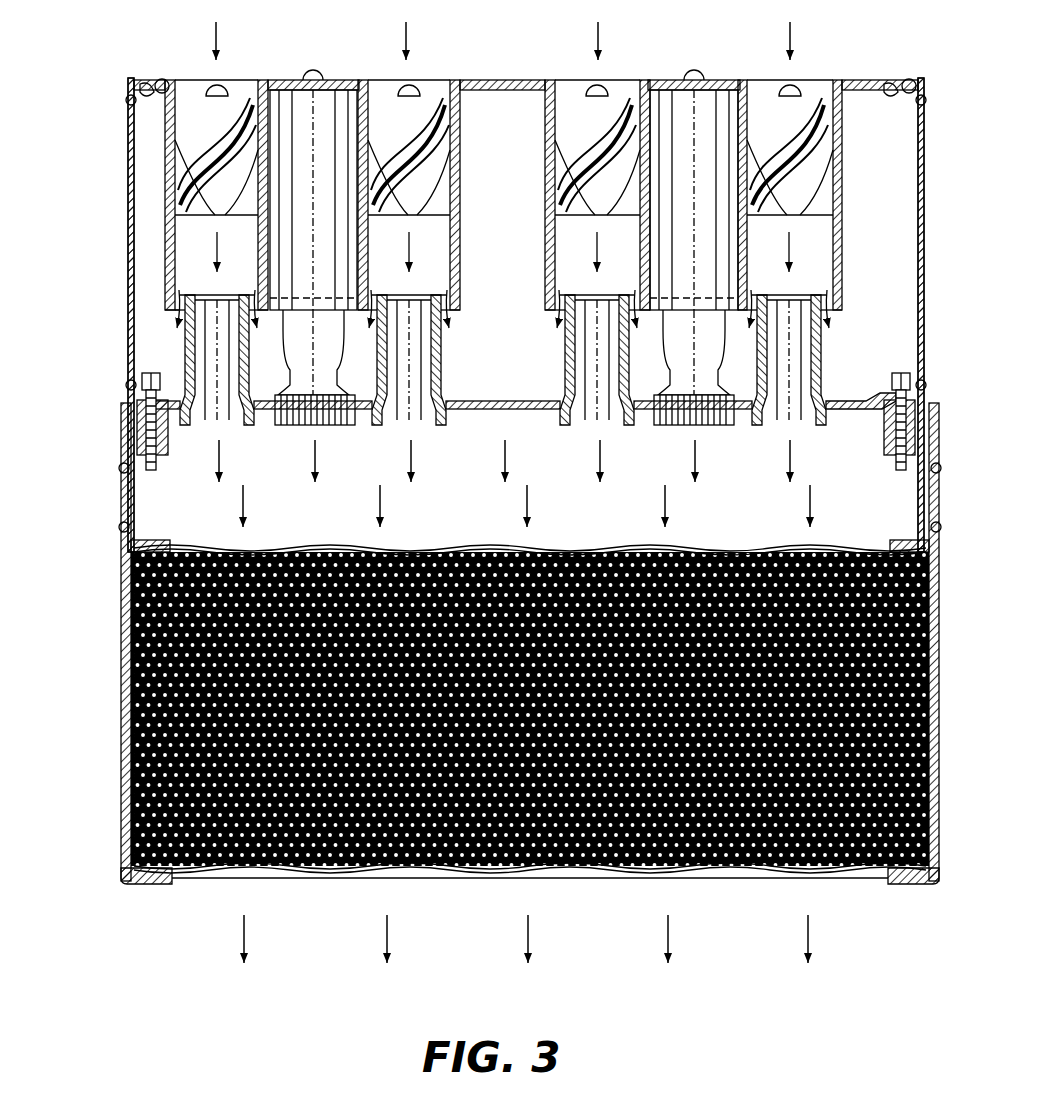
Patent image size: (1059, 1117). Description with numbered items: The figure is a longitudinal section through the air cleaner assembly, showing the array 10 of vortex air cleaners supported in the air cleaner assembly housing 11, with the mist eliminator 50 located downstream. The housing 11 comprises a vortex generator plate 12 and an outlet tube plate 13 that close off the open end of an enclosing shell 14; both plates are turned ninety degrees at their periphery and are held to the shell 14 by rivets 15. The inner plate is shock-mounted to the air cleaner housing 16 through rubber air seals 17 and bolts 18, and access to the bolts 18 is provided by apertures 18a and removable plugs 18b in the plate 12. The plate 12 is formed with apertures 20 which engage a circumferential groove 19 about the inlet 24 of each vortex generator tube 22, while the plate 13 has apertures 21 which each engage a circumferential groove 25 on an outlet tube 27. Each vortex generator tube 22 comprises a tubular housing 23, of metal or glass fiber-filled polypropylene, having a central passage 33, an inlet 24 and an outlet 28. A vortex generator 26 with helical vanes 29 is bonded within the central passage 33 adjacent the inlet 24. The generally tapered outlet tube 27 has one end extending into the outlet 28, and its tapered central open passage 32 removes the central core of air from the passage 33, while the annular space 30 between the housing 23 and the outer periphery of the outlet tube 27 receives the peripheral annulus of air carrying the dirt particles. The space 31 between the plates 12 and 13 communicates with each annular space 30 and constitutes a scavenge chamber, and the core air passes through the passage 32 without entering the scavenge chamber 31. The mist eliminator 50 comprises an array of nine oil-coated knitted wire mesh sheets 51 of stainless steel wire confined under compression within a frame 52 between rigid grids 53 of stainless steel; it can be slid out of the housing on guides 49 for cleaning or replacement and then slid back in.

The array of vortex air cleaners 10 is at (163, 266).
The air cleaner assembly housing 11 is at (126, 224).
The vortex generator plate 12 is at (497, 80).
The outlet tube plate 13 is at (478, 401).
The enclosing shell 14 is at (128, 158).
The rivets 15 is at (126, 100).
The air cleaner housing 16 is at (121, 496).
The rubber air seals 17 is at (172, 430).
The bolts 18 is at (160, 368).
The apertures 18a is at (165, 80).
The removable plugs 18b is at (146, 82).
The circumferential groove 19 is at (328, 80).
The apertures 20 is at (444, 82).
The apertures 21 is at (560, 420).
The vortex generator tube 22 is at (845, 208).
The tubular housing 23 is at (545, 238).
The inlet 24 is at (546, 80).
The circumferential groove 25 is at (560, 404).
The vortex generator 26 is at (556, 178).
The outlet tube 27 is at (562, 345).
The outlet 28 is at (555, 312).
The vanes 29 is at (556, 134).
The annular space 30 is at (634, 322).
The scavenge chamber 31 is at (501, 281).
The tapered central open passage 32 is at (503, 360).
The central passage 33 is at (503, 249).
The guides 49 is at (152, 884).
The mist eliminator 50 is at (360, 590).
The knitted wire mesh sheets 51 is at (565, 546).
The frame 52 is at (121, 684).
The rigid grids 53 is at (742, 546).